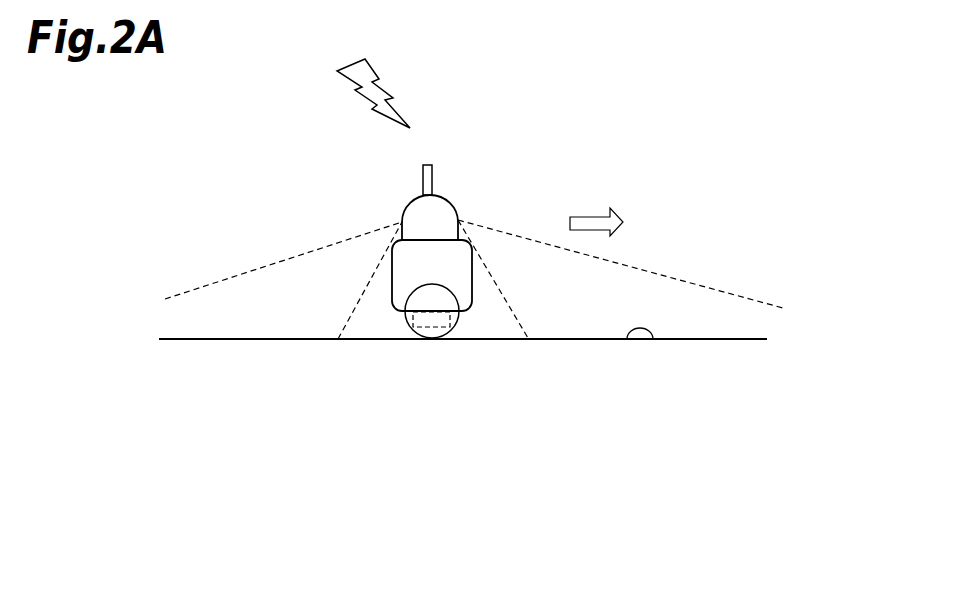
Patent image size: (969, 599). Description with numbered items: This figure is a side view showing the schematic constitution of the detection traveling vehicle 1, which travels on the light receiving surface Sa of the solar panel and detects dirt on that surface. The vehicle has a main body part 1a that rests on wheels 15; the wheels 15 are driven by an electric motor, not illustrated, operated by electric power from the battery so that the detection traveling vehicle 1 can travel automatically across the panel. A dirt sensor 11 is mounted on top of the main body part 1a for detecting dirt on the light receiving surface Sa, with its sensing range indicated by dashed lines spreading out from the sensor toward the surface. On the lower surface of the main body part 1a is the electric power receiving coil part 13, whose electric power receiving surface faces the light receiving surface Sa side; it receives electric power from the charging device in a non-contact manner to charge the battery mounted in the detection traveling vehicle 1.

The detection traveling vehicle 1 is at (443, 231).
The dirt sensor 11 is at (410, 202).
The main body part 1a is at (390, 283).
The wheels 15 is at (405, 318).
The electric power receiving coil part 13 is at (445, 330).
The light receiving surface Sa is at (653, 339).